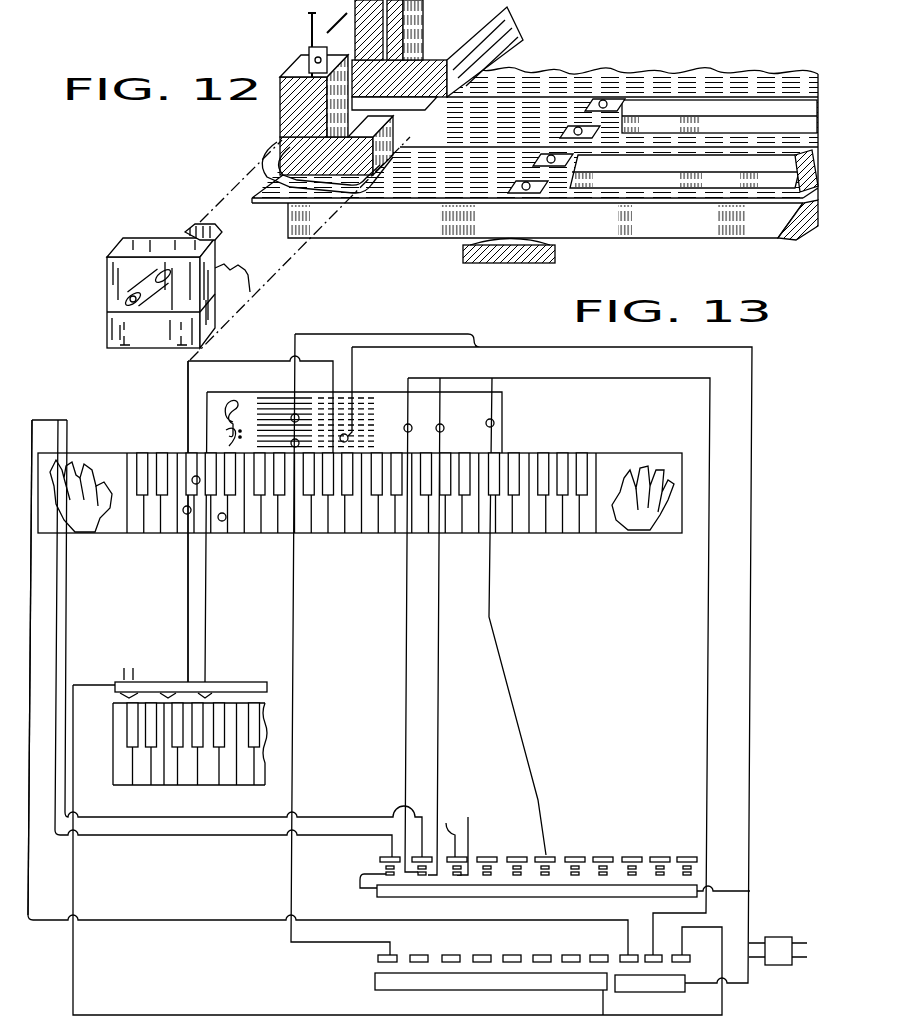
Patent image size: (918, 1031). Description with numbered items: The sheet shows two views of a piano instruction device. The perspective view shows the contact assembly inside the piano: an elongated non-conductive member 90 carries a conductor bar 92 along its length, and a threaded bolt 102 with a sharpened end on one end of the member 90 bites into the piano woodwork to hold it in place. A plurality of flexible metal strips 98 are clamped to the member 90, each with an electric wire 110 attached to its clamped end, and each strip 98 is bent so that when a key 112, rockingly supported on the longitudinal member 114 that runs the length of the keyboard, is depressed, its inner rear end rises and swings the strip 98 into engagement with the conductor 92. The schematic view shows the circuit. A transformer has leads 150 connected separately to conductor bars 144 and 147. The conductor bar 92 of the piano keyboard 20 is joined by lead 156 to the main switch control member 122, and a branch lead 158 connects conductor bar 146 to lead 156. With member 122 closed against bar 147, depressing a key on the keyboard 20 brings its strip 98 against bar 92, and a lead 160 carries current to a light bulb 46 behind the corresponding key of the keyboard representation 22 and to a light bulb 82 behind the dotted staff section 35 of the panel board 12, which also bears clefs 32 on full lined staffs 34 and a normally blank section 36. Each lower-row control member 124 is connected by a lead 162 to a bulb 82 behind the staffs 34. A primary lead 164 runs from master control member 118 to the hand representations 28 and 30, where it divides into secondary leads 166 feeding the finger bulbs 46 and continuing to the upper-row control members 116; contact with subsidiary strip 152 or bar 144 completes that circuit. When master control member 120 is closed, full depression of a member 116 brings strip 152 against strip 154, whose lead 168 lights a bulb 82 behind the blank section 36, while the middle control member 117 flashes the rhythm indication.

In FIG. 12, the electric wire 110 is at (308, 33).
In FIG. 12, the conductor bar 92 is at (525, 42).
In FIG. 13, the conductor bar 92 is at (215, 687).
In FIG. 12, the flexible metal strip 98 is at (289, 176).
In FIG. 13, the flexible metal strip 98 is at (175, 680).
In FIG. 12, the threaded bolt 102 is at (127, 295).
In FIG. 12, the elongated member 90 is at (107, 345).
In FIG. 12, the key 112 is at (370, 232).
In FIG. 12, the longitudinal member 114 is at (490, 265).
In FIG. 13, the full lined staffs 34 is at (292, 413).
In FIG. 13, the dotted staff section 35 is at (360, 398).
In FIG. 13, the panel board 12 is at (502, 415).
In FIG. 13, the blank section 36 is at (475, 434).
In FIG. 13, the light bulb 82 is at (348, 438).
In FIG. 13, the clefs 32 is at (226, 432).
In FIG. 13, the secondary leads 166 is at (60, 435).
In FIG. 13, the light bulb 46 is at (80, 462).
In FIG. 13, the left hand 28 is at (75, 522).
In FIG. 13, the central section 22 is at (275, 523).
In FIG. 13, the right hand 30 is at (652, 528).
In FIG. 13, the lead 160 is at (186, 585).
In FIG. 13, the lead 162 is at (293, 638).
In FIG. 13, the lead 168 is at (406, 648).
In FIG. 13, the piano keyboard 20 is at (186, 775).
In FIG. 13, the primary lead 164 is at (30, 897).
In FIG. 13, the lead 156 is at (75, 987).
In FIG. 13, the control members 116 is at (515, 855).
In FIG. 13, the middle control member 117 is at (548, 855).
In FIG. 13, the subsidiary strip 152 is at (618, 862).
In FIG. 13, the subsidiary strip 154 is at (672, 866).
In FIG. 13, the conductor bar 144 is at (491, 888).
In FIG. 13, the control member 124 is at (391, 957).
In FIG. 13, the master control member 118 is at (627, 956).
In FIG. 13, the master control member 120 is at (655, 957).
In FIG. 13, the master control member 122 is at (685, 957).
In FIG. 13, the leads 150 is at (762, 944).
In FIG. 13, the conductor bar 146 is at (463, 983).
In FIG. 13, the branch lead 158 is at (600, 1003).
In FIG. 13, the conductor bar 147 is at (630, 984).